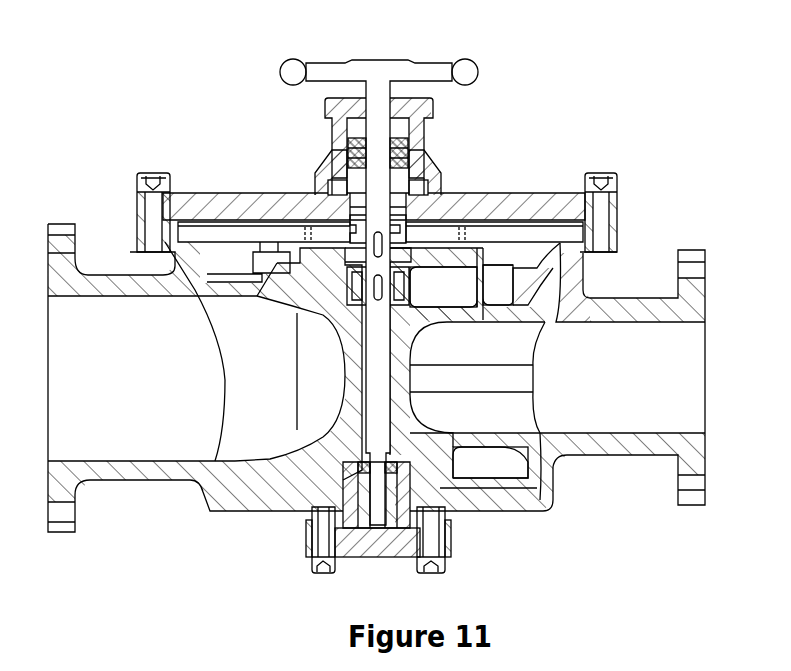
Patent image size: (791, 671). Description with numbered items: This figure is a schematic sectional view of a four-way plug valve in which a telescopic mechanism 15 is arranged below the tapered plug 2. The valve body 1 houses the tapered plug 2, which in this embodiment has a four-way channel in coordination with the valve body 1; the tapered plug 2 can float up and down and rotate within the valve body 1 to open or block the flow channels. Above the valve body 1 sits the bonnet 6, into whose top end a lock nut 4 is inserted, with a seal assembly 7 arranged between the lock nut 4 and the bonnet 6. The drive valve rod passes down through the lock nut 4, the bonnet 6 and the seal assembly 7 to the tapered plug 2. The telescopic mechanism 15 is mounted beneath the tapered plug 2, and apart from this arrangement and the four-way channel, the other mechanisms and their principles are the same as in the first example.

The valve body 1 is at (127, 282).
The tapered plug 2 is at (477, 267).
The lock nut 4 is at (420, 105).
The bonnet 6 is at (342, 168).
The seal assembly 7 is at (410, 150).
The telescopic mechanism 15 is at (423, 525).